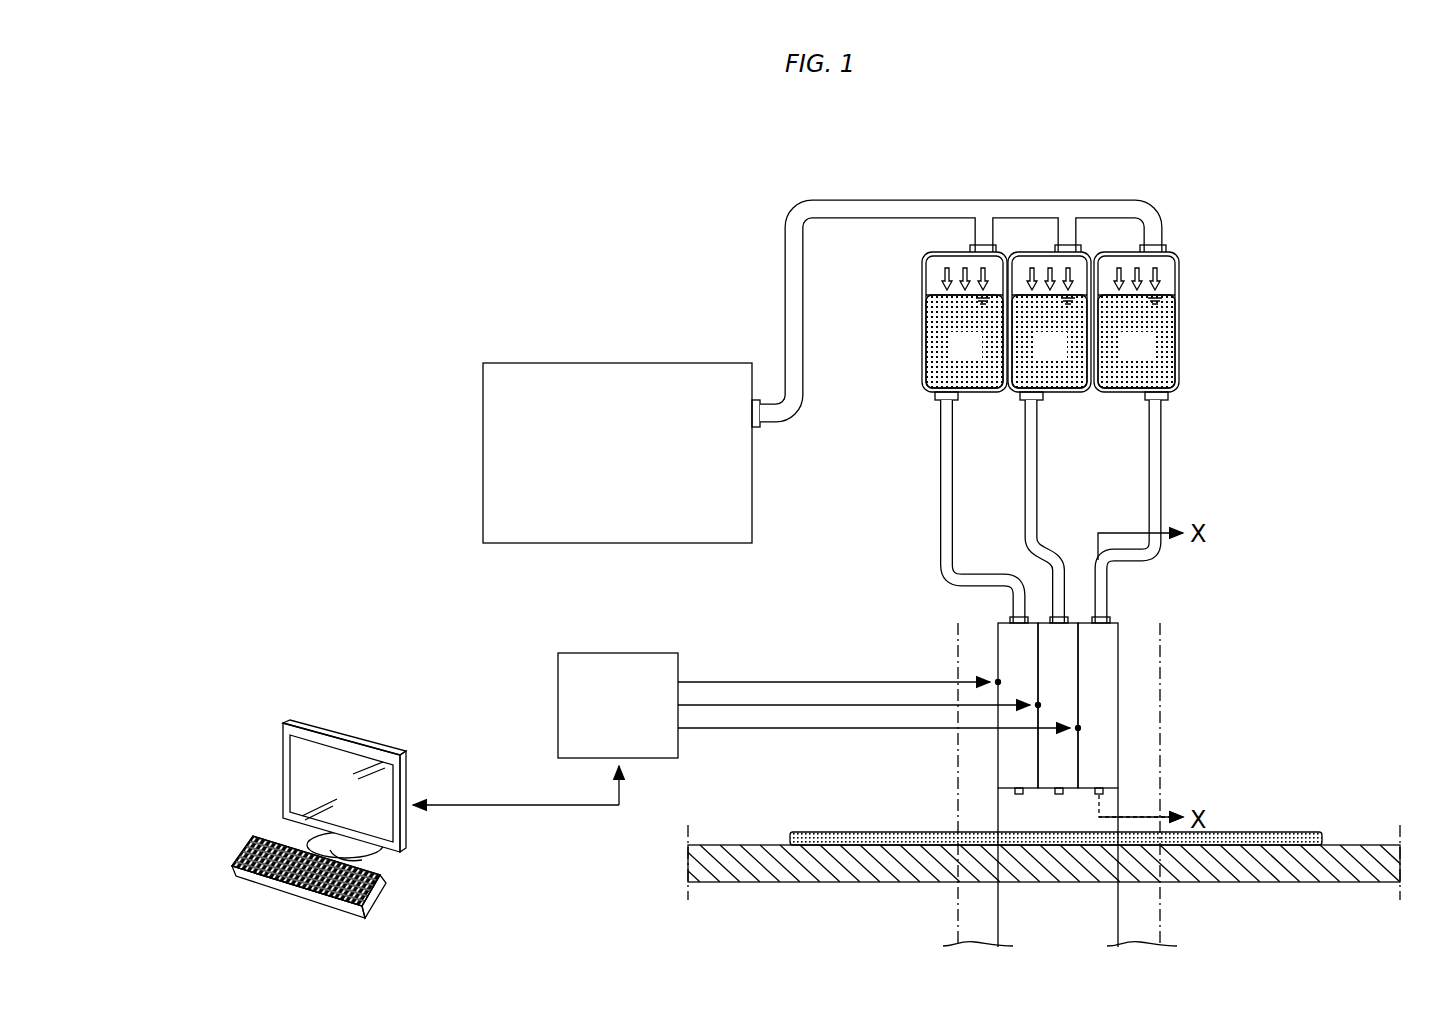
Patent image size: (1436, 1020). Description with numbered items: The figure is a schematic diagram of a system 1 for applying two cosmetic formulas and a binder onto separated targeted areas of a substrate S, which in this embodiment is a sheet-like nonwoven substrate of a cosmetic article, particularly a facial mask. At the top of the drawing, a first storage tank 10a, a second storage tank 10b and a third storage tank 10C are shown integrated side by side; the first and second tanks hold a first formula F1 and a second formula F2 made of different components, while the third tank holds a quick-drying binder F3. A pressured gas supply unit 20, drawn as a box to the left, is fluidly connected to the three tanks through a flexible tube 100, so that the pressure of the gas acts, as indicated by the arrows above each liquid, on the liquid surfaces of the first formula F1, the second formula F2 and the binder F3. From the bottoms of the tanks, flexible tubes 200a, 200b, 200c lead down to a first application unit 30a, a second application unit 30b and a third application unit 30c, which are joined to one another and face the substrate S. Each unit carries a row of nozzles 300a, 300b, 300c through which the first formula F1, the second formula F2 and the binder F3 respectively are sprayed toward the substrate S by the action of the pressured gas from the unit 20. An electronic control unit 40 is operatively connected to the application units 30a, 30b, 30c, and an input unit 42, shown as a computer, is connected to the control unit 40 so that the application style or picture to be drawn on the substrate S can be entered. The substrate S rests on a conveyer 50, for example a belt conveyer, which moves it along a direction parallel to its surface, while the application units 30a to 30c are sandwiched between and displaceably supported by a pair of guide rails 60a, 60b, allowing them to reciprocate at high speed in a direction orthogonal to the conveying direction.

The system 1 is at (648, 243).
The first storage tank 10a is at (1183, 297).
The second storage tank 10b is at (1049, 274).
The third storage tank 10C is at (958, 274).
The flexible tube 100 is at (800, 327).
The pressured gas supply unit 20 is at (636, 470).
The flexible tube 200a is at (1162, 470).
The flexible tube 200b is at (1038, 496).
The flexible tube 200c is at (942, 518).
The first application unit 30a is at (1113, 627).
The second application unit 30b is at (1073, 627).
The third application unit 30c is at (1008, 627).
The nozzles 300a is at (1105, 795).
The nozzles 300b is at (1058, 795).
The nozzles 300c is at (1017, 797).
The electronic control unit 40 is at (636, 722).
The input unit 42 is at (218, 712).
The conveyer 50 is at (752, 882).
The guide rail 60a is at (958, 750).
The guide rail 60b is at (1160, 661).
The substrate S is at (1306, 829).
The first formula F1 is at (1153, 358).
The second formula F2 is at (1066, 358).
The quick-drying binder F3 is at (981, 358).